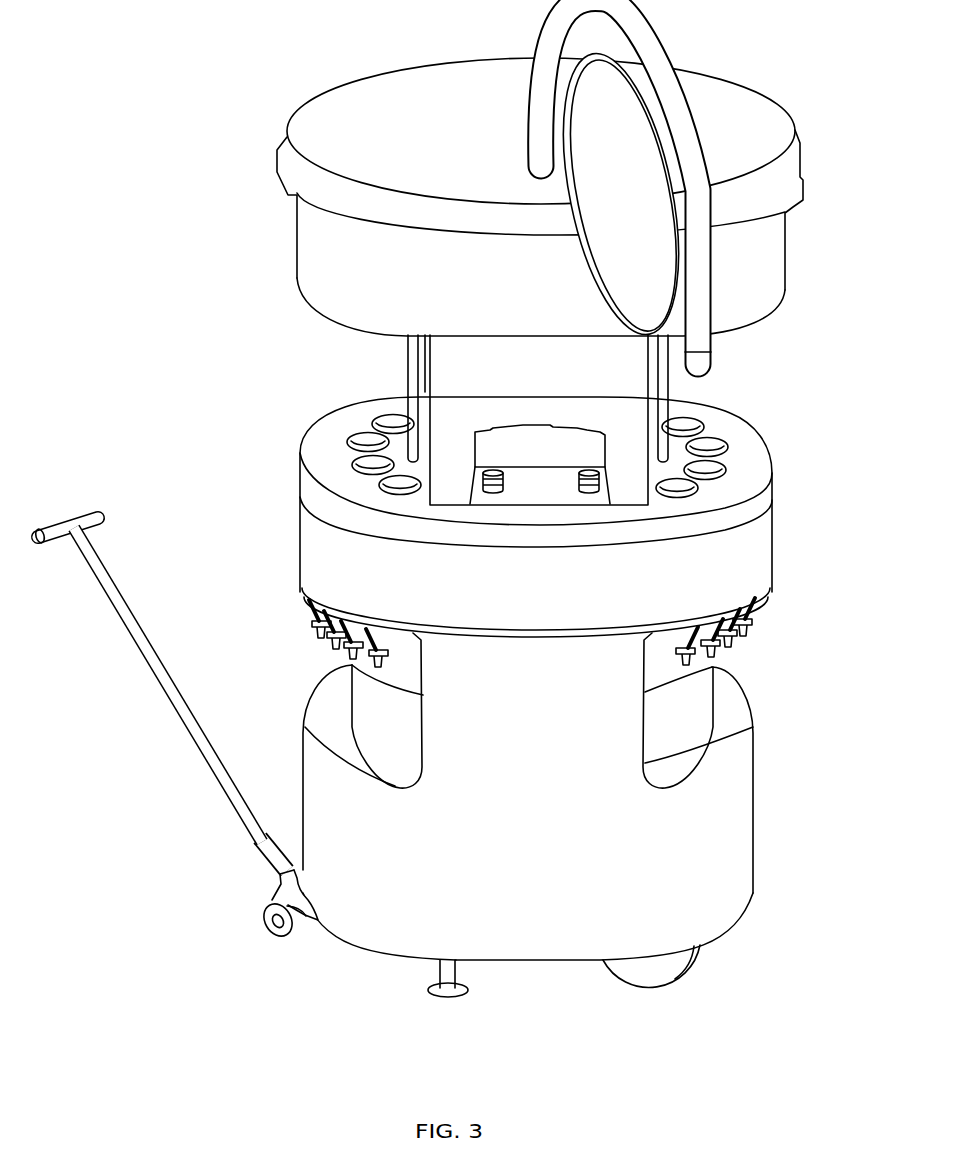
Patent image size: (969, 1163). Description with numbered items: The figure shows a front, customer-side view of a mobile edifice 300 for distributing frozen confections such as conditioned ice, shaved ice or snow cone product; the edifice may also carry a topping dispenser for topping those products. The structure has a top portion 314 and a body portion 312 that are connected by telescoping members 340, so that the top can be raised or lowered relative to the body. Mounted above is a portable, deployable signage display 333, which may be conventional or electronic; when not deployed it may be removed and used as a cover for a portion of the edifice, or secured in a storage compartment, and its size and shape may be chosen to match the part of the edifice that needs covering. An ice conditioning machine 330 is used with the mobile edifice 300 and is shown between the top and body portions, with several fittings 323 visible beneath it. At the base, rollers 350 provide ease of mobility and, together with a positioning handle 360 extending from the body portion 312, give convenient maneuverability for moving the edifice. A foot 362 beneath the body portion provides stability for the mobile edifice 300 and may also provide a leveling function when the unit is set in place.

The mobile edifice 300 is at (218, 161).
The body portion 312 is at (333, 812).
The top portion 314 is at (760, 262).
The valves / connectors 323 is at (310, 617).
The ice conditioning machine 330 is at (523, 445).
The deployable signage display 333 is at (675, 90).
The telescoping members 340 is at (405, 385).
The rollers 350 is at (650, 965).
The positioning handle 360 is at (250, 828).
The foot 362 is at (427, 987).